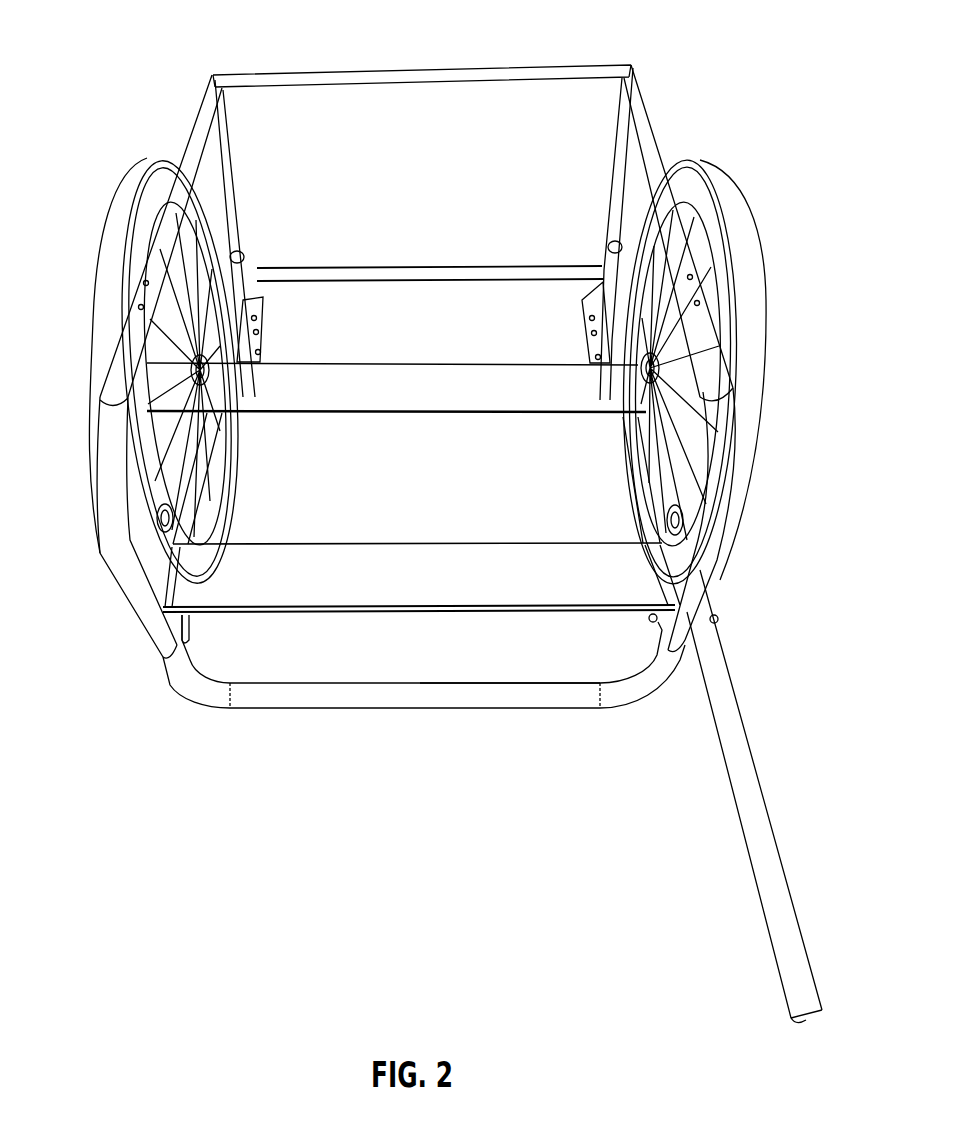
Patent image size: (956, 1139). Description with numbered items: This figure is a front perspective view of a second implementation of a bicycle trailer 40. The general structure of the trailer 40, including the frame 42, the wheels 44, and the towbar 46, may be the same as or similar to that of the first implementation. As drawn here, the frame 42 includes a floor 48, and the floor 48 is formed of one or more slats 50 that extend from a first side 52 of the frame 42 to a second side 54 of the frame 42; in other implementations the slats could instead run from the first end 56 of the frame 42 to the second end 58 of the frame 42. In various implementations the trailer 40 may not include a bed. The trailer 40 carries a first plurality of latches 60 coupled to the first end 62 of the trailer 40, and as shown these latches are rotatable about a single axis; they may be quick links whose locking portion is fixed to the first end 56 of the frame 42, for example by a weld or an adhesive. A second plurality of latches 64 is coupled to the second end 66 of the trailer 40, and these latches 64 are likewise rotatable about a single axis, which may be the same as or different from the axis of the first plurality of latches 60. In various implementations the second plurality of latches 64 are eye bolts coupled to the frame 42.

The trailer 40 is at (690, 40).
The frame 42 is at (340, 692).
The wheels 44 is at (160, 183).
The towbar 46 is at (765, 833).
The floor 48 is at (630, 440).
The slats 50 is at (262, 393).
The first side of the frame 52 is at (246, 312).
The second side of the frame 54 is at (602, 279).
The first end of the frame 56 is at (514, 693).
The second end of the frame 58 is at (563, 267).
The first plurality of latches 60 is at (143, 463).
The first end of the trailer 62 is at (186, 618).
The second plurality of latches 64 is at (200, 150).
The second end of the trailer 66 is at (242, 254).